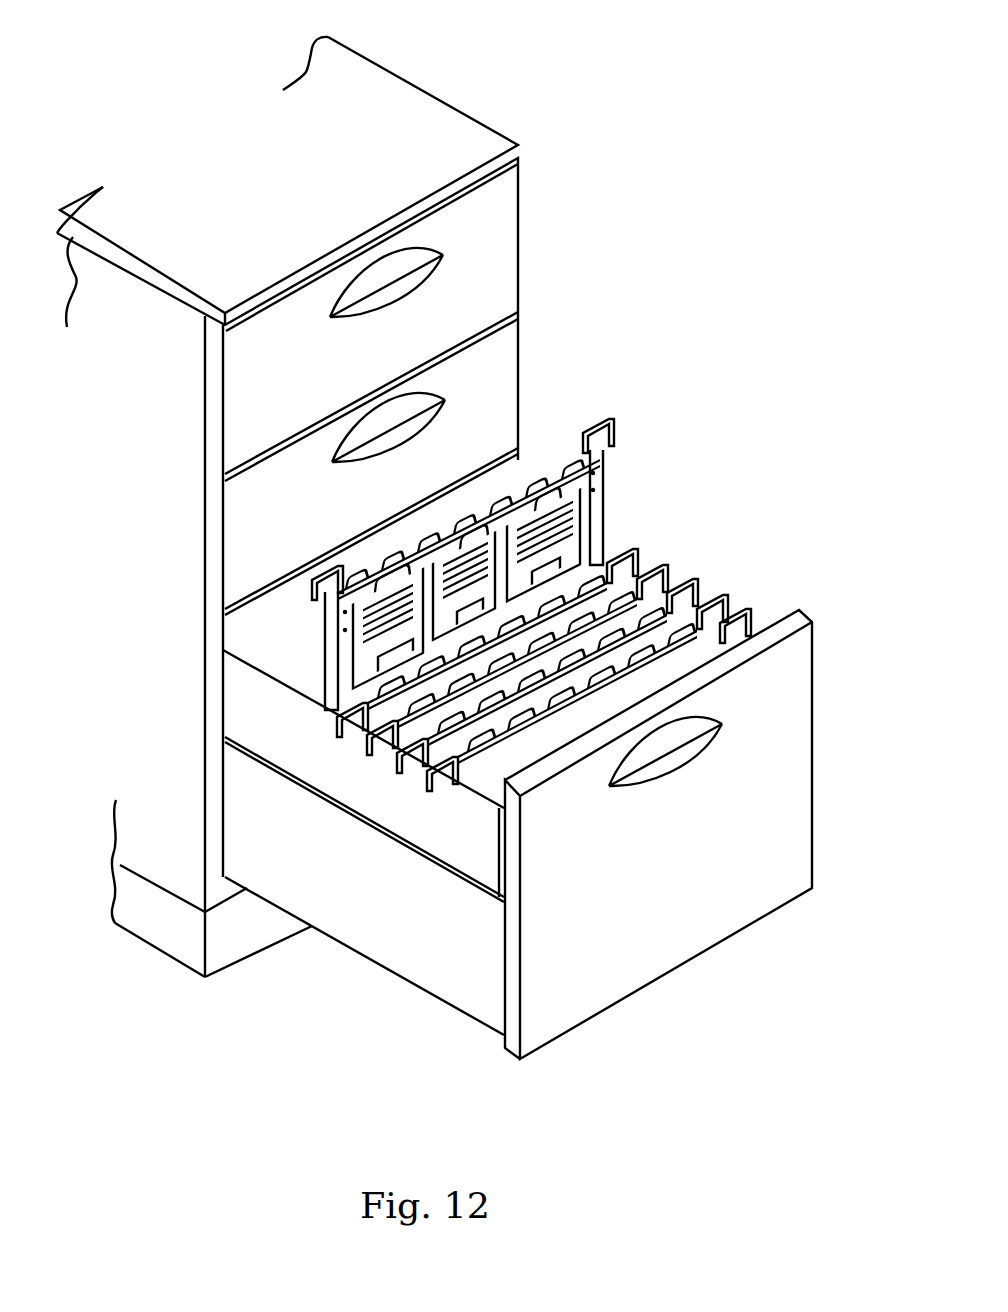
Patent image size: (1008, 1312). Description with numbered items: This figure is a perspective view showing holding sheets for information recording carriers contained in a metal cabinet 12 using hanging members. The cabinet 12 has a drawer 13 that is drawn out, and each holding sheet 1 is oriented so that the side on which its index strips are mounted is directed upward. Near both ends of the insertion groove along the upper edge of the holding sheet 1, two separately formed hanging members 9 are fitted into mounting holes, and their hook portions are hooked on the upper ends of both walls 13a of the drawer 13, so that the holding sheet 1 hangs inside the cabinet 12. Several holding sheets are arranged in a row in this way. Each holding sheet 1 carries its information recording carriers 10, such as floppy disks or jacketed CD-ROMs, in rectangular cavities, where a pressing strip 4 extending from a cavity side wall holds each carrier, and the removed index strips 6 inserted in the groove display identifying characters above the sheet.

The cabinet 12 is at (523, 125).
The drawer 13 is at (784, 750).
The walls of the drawer 13a is at (410, 940).
The holding sheet 1 is at (610, 500).
The pressing strip 4 is at (377, 677).
The index strip 6 is at (406, 548).
The hanging member 9 is at (322, 577).
The information recording carrier 10 is at (533, 528).